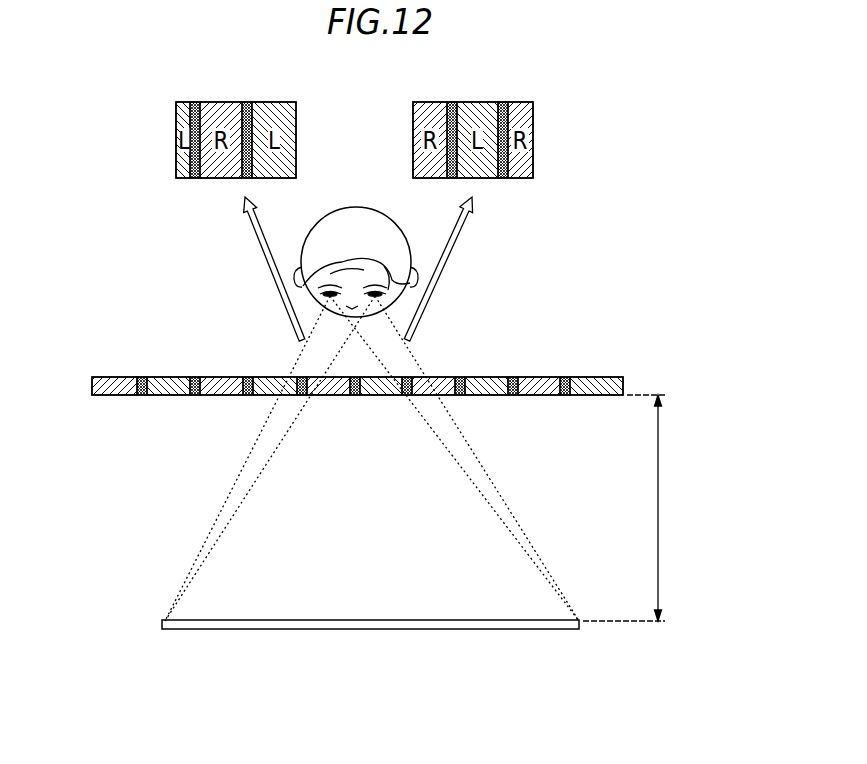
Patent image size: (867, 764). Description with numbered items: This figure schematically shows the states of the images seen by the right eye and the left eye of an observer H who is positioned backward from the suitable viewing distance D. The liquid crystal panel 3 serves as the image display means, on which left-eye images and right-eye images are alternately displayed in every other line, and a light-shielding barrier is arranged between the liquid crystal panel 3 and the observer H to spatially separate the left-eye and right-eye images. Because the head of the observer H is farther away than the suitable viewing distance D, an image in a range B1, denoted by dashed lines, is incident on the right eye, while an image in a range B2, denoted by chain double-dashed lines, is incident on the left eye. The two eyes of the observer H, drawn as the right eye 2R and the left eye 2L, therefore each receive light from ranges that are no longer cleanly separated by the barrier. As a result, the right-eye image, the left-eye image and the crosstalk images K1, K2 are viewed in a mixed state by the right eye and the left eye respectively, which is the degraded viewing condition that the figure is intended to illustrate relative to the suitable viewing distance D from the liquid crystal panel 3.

The crosstalk image K1 is at (195, 102).
The crosstalk image K2 is at (247, 102).
The observer H is at (348, 212).
The right eye 2R is at (318, 300).
The left eye 2L is at (392, 300).
The range B1 is at (240, 468).
The range B2 is at (489, 483).
The suitable viewing distance D is at (624, 508).
The liquid crystal panel 3 is at (498, 630).